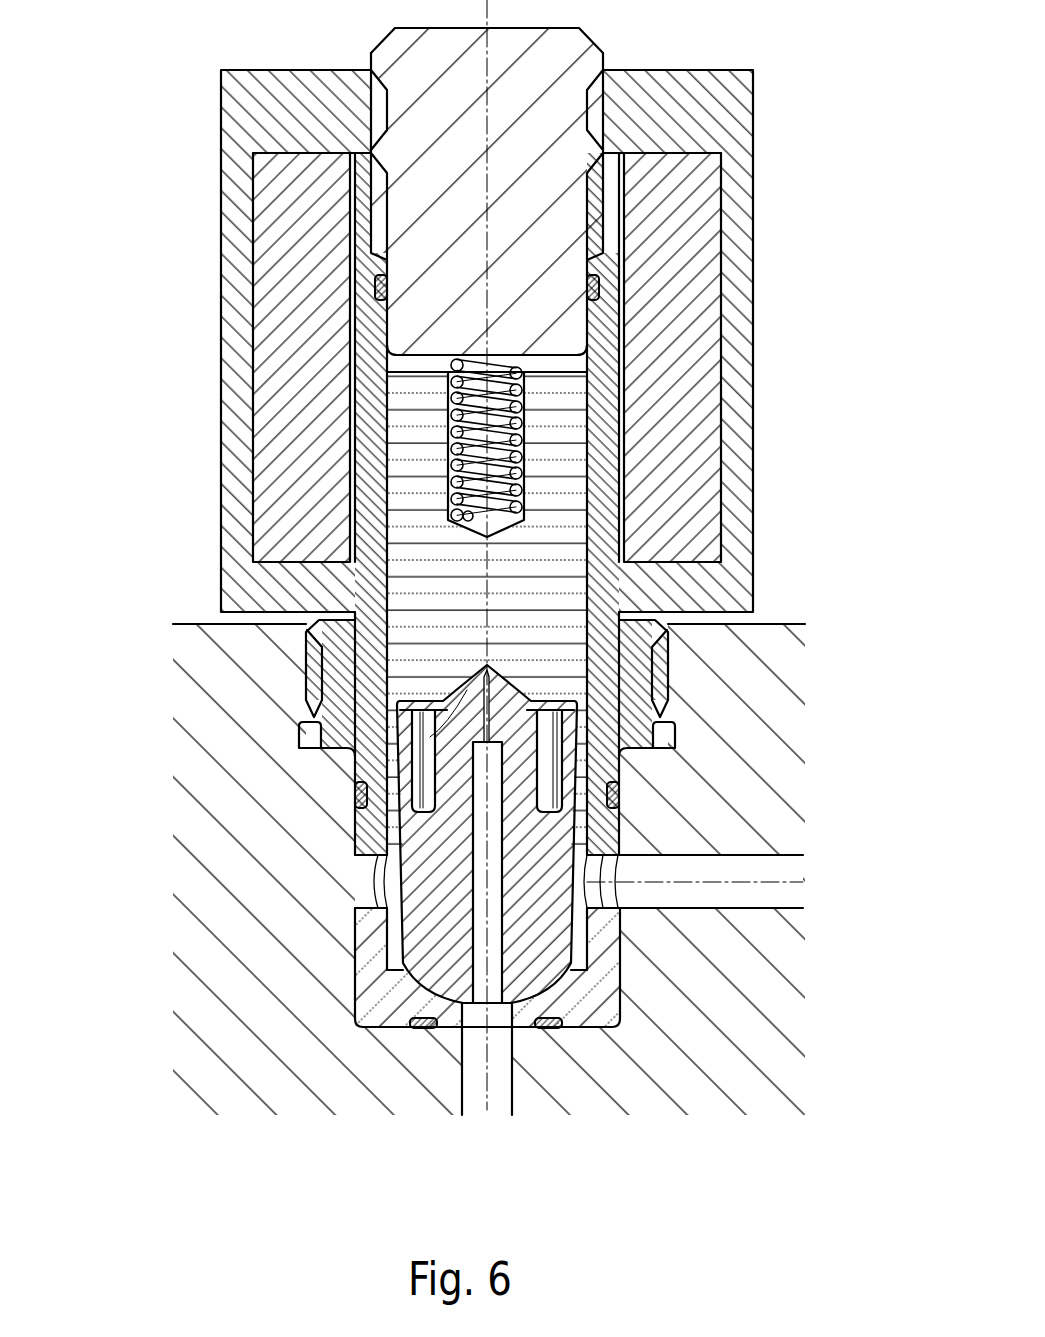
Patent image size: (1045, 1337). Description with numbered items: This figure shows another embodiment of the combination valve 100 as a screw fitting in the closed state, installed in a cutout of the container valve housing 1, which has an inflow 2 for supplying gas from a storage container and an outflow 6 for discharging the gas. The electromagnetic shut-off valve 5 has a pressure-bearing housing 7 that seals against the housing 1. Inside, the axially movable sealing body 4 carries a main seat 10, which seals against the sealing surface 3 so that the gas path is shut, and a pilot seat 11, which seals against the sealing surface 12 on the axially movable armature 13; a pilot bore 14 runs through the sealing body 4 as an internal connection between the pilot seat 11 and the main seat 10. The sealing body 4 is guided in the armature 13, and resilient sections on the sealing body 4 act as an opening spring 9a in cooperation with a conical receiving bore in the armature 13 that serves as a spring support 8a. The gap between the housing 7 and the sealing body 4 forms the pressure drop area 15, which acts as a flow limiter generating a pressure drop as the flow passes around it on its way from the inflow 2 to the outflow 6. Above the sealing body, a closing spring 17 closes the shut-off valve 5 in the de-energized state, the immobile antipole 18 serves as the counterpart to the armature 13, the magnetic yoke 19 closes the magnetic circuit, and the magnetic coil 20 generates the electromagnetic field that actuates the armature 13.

The combination valve 100 is at (482, 595).
The container valve housing 1 is at (760, 1098).
The inflow 2 is at (762, 890).
The sealing surface 3 is at (545, 1025).
The sealing body 4 is at (405, 938).
The electromagnetic shut-off valve 5 is at (460, 441).
The outflow 6 is at (480, 1080).
The pressure-bearing housing 7 is at (605, 580).
The spring support 8a is at (577, 745).
The opening spring 9a is at (577, 722).
The main seat 10 is at (380, 990).
The pilot seat 11 is at (335, 742).
The sealing surface 12 is at (490, 667).
The armature 13 is at (415, 580).
The pilot bore 14 is at (470, 830).
The pressure drop area 15 is at (587, 908).
The closing spring 17 is at (590, 436).
The antipole 18 is at (540, 245).
The magnetic yoke 19 is at (243, 498).
The magnetic coil 20 is at (291, 268).